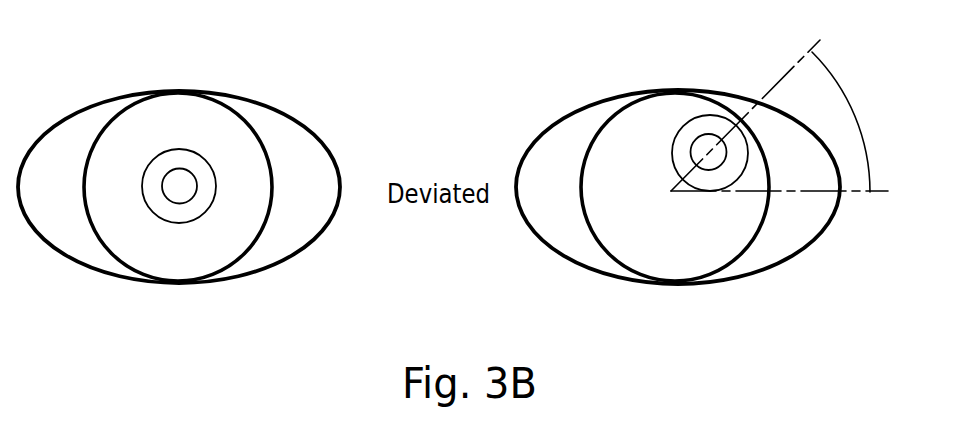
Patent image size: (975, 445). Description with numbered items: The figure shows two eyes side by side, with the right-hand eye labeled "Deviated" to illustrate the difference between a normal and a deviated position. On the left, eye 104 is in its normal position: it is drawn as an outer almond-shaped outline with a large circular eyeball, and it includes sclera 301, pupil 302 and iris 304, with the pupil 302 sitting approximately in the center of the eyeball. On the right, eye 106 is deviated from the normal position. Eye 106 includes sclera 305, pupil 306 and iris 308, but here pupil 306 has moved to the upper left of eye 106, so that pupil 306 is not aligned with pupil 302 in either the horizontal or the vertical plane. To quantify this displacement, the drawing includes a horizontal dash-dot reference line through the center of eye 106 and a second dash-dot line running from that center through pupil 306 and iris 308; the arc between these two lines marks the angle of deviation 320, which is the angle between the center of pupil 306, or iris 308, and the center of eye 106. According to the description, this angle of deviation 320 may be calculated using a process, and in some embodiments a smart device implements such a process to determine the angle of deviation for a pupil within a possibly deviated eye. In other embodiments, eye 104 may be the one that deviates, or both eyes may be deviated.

The eye 104 is at (238, 263).
The sclera 301 is at (257, 180).
The pupil 302 is at (205, 155).
The iris 304 is at (163, 197).
The eye 106 is at (737, 263).
The sclera 305 is at (558, 222).
The pupil 306 is at (692, 117).
The iris 308 is at (713, 133).
The angle of deviation 320 is at (794, 116).